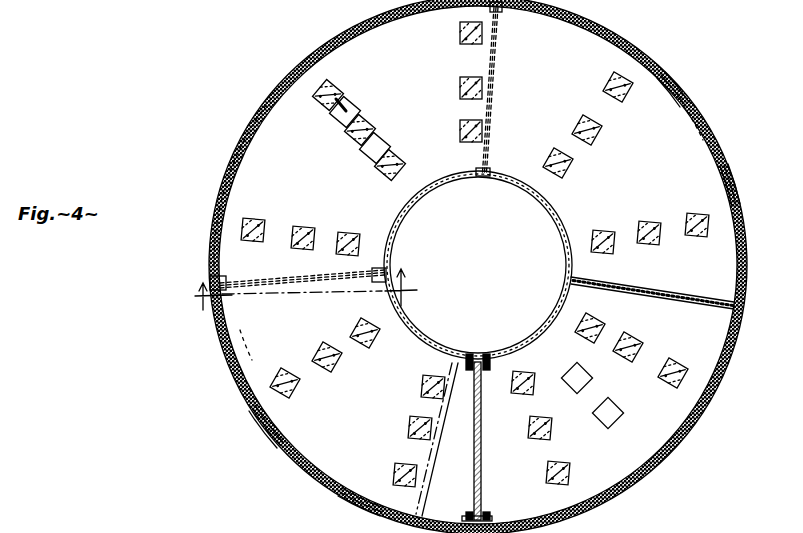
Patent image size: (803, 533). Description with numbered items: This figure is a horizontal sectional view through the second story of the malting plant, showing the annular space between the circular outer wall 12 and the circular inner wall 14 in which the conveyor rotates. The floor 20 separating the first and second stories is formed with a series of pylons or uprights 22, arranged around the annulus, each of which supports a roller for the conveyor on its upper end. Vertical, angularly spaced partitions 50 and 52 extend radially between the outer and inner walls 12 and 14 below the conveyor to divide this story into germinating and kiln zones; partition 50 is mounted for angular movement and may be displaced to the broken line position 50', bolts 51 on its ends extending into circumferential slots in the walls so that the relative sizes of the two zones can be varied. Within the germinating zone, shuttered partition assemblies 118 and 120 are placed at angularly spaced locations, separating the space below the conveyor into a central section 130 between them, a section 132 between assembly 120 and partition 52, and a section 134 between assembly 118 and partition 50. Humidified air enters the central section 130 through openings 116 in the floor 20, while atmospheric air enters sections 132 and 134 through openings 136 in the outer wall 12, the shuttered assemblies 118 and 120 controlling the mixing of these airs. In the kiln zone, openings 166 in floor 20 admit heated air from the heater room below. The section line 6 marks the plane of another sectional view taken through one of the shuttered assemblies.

The outer wall 12 is at (260, 110).
The inner wall 14 is at (413, 206).
The floor 20 is at (337, 419).
The pylons 22 is at (314, 221).
The partition 50 is at (493, 437).
The broken line position 50' is at (446, 439).
The bolts 51 is at (488, 515).
The partition 52 is at (644, 293).
The openings 116 is at (378, 148).
The shuttered partition assembly 118 is at (300, 272).
The shuttered partition assembly 120 is at (518, 72).
The central section 130 is at (285, 97).
The section 132 is at (680, 123).
The section 134 is at (245, 345).
The openings 136 is at (672, 82).
The openings 166 is at (609, 398).
The section line 6 is at (298, 284).